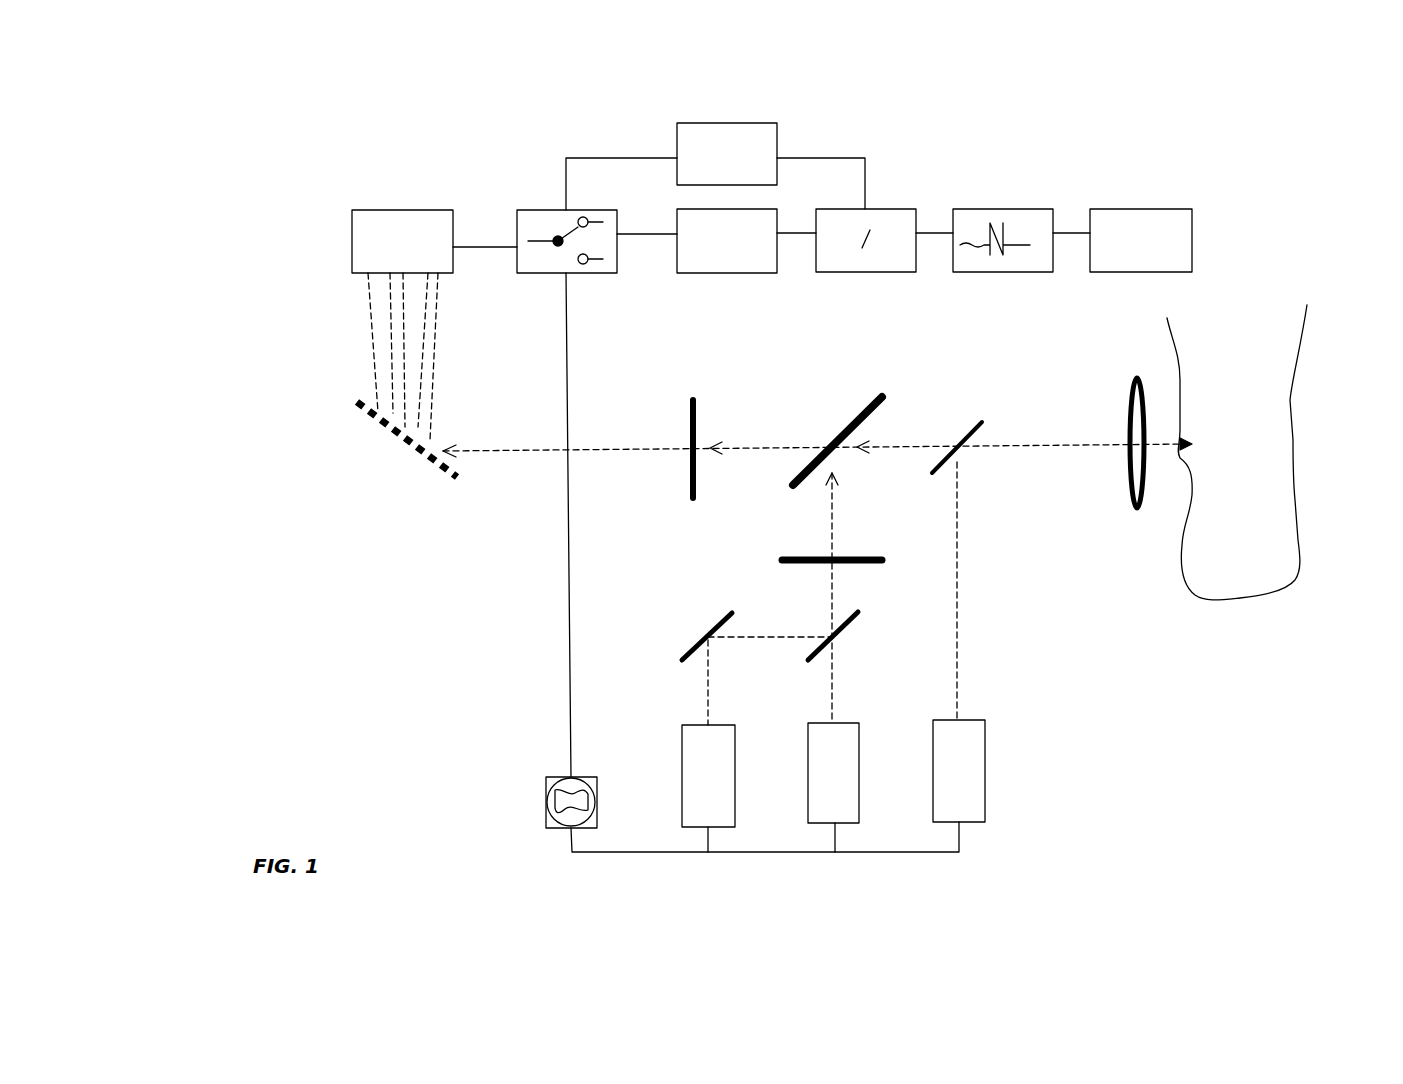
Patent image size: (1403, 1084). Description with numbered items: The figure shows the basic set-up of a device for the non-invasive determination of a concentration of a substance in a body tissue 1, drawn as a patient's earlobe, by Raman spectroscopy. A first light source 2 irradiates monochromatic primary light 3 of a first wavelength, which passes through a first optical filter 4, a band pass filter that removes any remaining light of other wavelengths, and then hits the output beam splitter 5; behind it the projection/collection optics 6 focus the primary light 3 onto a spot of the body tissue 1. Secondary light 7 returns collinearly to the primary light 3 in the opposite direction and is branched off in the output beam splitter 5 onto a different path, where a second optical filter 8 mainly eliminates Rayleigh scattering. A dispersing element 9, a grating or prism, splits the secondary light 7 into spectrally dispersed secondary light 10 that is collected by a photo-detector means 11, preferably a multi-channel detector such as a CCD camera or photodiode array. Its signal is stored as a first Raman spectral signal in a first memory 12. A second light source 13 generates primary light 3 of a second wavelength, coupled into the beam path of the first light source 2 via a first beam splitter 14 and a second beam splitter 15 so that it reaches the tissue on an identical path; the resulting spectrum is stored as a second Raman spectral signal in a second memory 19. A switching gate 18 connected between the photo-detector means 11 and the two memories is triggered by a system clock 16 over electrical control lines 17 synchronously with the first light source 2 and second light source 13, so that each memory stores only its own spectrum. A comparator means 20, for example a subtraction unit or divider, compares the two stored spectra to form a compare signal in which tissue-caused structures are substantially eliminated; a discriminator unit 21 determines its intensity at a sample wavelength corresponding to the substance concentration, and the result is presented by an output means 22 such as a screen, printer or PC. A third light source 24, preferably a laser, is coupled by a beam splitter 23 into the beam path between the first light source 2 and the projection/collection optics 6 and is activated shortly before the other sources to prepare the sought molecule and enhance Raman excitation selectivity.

The body tissue 1 is at (1277, 472).
The first light source 2 is at (833, 810).
The primary light 3 is at (833, 520).
The first optical filter 4 is at (800, 557).
The output beam splitter 5 is at (865, 400).
The projection/collection optics 6 is at (1137, 525).
The secondary light 7 is at (760, 440).
The second optical filter 8 is at (680, 490).
The dispersing element 9 is at (397, 450).
The spectrally dispersed secondary light 10 is at (390, 347).
The photo-detector means 11 is at (380, 243).
The first memory 12 is at (727, 254).
The second light source 13 is at (710, 800).
The first beam splitter 14 is at (850, 623).
The second beam splitter 15 is at (707, 635).
The system clock 16 is at (546, 777).
The electrical control lines 17 is at (570, 612).
The switching gate 18 is at (545, 222).
The second memory 19 is at (728, 142).
The comparator means 20 is at (890, 209).
The discriminator unit 21 is at (1017, 213).
The output means 22 is at (1140, 209).
The beam splitter 23 is at (963, 455).
The third light source 24 is at (967, 800).